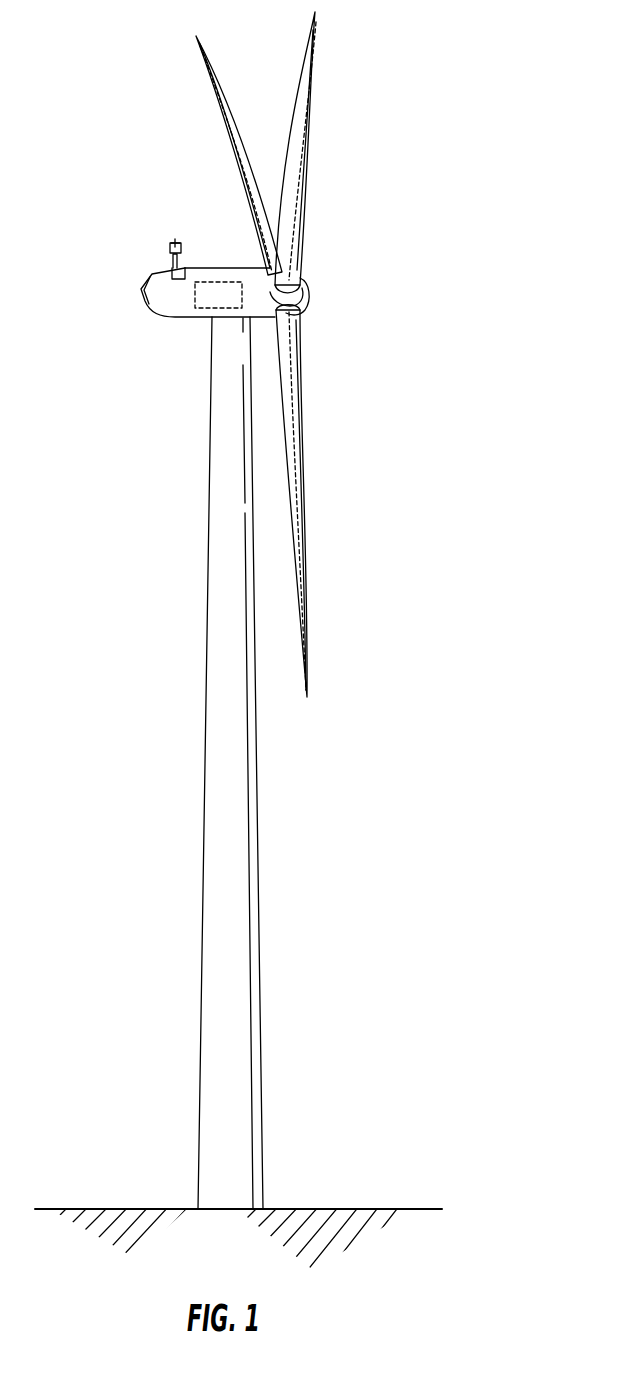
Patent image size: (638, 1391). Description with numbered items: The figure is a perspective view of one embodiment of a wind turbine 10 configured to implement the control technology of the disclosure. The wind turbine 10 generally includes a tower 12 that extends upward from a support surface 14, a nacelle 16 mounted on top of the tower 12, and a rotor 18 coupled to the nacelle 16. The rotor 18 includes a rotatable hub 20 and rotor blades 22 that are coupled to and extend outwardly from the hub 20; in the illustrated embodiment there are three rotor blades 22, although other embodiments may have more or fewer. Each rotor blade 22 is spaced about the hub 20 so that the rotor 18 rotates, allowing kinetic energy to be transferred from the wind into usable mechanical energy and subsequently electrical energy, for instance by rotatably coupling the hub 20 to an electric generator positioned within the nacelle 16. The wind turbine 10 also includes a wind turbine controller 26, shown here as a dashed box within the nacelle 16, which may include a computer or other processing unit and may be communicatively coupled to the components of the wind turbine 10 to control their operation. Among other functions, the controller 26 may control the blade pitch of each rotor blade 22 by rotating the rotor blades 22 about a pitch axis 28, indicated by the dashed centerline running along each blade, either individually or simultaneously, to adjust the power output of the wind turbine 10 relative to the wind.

The wind turbine 10 is at (413, 101).
The tower 12 is at (217, 885).
The support surface 14 is at (118, 1208).
The nacelle 16 is at (188, 318).
The rotor 18 is at (315, 271).
The rotatable hub 20 is at (310, 298).
The rotor blade 22 is at (295, 134).
The wind turbine controller 26 is at (219, 281).
The pitch axis 28 is at (232, 150).